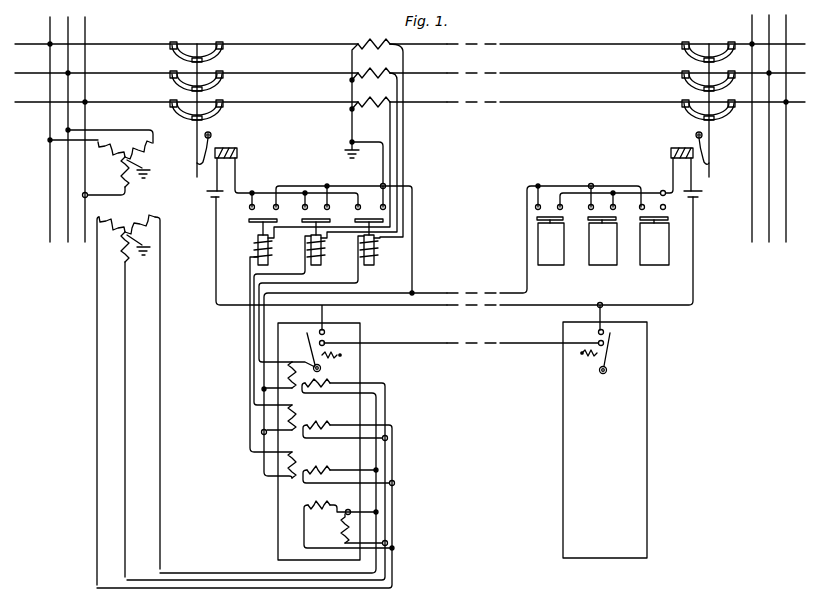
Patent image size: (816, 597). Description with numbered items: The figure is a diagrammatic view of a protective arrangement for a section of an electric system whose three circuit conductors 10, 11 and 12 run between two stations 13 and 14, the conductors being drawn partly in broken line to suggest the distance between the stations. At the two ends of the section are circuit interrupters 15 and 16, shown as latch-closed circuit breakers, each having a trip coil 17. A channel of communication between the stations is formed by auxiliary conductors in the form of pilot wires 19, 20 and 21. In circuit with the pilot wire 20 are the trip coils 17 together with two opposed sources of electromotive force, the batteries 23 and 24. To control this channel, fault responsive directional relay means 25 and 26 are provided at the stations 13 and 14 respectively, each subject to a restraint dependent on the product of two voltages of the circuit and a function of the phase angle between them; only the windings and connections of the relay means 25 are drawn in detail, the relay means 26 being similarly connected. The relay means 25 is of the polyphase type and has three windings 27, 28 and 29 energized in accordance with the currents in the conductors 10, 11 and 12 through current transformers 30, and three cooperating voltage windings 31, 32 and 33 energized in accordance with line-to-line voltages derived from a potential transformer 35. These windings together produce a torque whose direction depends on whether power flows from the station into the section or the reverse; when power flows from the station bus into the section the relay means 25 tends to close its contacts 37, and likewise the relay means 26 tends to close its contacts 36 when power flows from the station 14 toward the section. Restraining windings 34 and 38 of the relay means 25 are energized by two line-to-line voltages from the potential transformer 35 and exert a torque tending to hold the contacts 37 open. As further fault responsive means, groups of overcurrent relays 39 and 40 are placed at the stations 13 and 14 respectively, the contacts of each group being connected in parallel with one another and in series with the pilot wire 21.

The circuit conductor 10 is at (297, 106).
The circuit conductor 11 is at (297, 77).
The circuit conductor 12 is at (297, 48).
The station 13 is at (79, 267).
The station 14 is at (780, 266).
The circuit interrupter 15 is at (218, 110).
The circuit interrupter 16 is at (698, 111).
The trip coil 17 is at (228, 148).
The pilot wire 19 is at (433, 348).
The pilot wire 20 is at (432, 307).
The pilot wire 21 is at (432, 297).
The battery 23 is at (205, 196).
The battery 24 is at (704, 196).
The fault responsive directional relay means 25 is at (278, 508).
The fault responsive directional relay means 26 is at (647, 490).
The winding 27 is at (298, 463).
The winding 28 is at (298, 416).
The winding 29 is at (303, 359).
The current transformer 30 is at (375, 50).
The voltage winding 31 is at (330, 470).
The voltage winding 32 is at (330, 425).
The voltage winding 33 is at (330, 383).
The restraining winding 34 is at (330, 507).
The potential transformer 35 is at (135, 213).
The contacts 36 is at (598, 332).
The contacts 37 is at (327, 332).
The restraining winding 38 is at (340, 533).
The overcurrent relay 39 is at (272, 261).
The overcurrent relay 40 is at (603, 241).